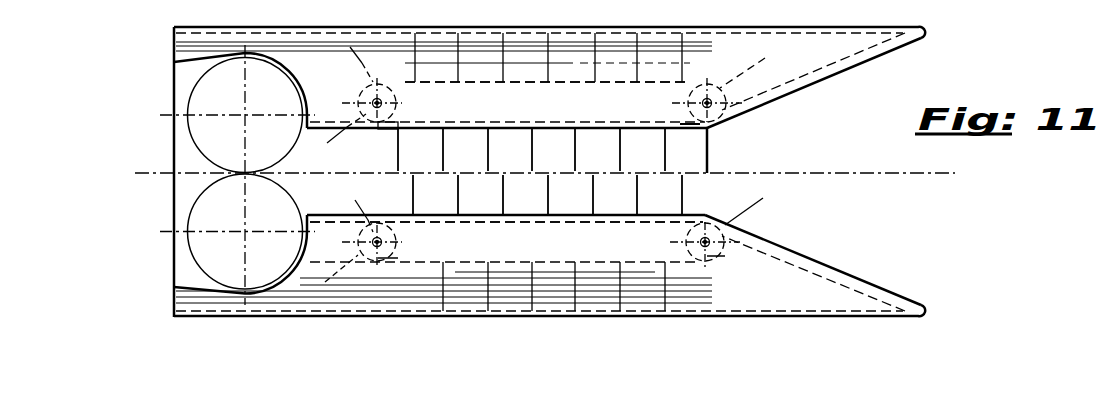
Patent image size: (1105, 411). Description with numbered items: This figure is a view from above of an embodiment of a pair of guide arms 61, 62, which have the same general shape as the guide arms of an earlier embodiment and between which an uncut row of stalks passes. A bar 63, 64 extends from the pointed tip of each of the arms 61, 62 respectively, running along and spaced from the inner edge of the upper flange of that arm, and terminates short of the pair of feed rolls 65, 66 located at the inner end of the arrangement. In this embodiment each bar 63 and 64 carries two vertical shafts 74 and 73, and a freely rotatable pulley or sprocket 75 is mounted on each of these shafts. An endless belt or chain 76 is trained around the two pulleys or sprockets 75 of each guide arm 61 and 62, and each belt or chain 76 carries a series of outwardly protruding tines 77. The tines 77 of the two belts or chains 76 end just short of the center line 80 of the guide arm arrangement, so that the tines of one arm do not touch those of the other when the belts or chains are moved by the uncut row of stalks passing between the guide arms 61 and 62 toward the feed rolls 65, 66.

The guide arm 61 is at (790, 46).
The guide arm 62 is at (835, 292).
The bar 63 is at (818, 78).
The bar 64 is at (810, 258).
The feed roll 65 is at (207, 100).
The feed roll 66 is at (210, 250).
The vertical shaft 73 is at (377, 98).
The vertical shaft 74 is at (708, 99).
The pulley or sprocket 75 is at (395, 108).
The endless belt or chain 76 is at (536, 83).
The tines 77 is at (640, 48).
The center line 80 is at (852, 173).